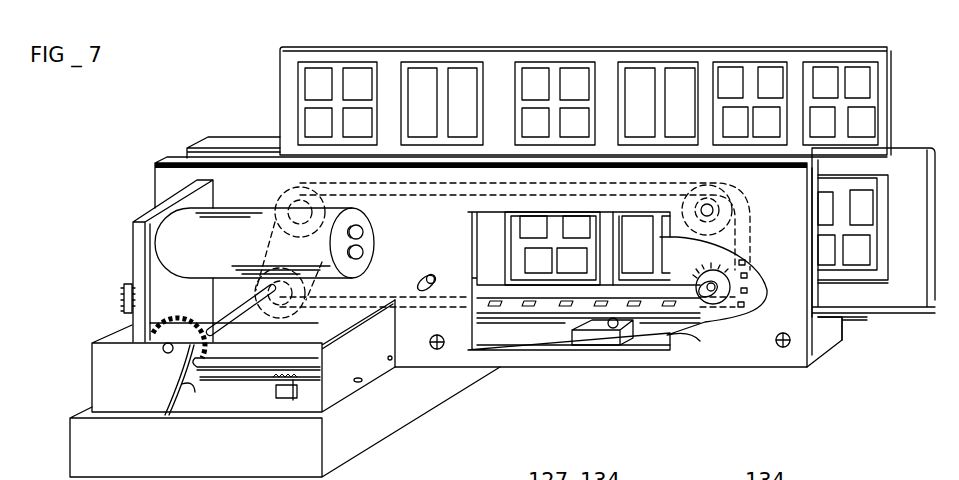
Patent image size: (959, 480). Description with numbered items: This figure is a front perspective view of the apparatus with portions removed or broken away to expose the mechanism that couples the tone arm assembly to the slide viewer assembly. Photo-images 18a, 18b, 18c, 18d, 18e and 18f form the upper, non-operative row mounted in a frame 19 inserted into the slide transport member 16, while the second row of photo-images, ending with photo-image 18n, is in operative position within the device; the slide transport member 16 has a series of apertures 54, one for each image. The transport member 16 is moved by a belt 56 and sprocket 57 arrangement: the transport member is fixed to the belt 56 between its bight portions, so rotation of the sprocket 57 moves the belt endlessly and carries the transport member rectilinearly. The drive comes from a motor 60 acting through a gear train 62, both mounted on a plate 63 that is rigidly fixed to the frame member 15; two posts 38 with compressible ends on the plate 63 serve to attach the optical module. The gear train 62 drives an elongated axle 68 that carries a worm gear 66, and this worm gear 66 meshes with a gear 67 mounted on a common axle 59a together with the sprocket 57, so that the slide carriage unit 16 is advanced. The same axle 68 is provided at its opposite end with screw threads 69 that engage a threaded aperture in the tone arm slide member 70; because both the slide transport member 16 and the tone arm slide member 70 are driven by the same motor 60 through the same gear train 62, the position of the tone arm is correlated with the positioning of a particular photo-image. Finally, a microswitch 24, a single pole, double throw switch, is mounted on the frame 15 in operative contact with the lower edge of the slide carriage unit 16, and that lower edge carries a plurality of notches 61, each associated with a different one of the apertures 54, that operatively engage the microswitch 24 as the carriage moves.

The frame member 15 is at (85, 453).
The slide transport member 16 is at (906, 290).
The photo-image 18a is at (323, 62).
The photo-image 18b is at (443, 62).
The photo-image 18c is at (558, 62).
The photo-image 18d is at (650, 62).
The photo-image 18e is at (738, 62).
The photo-image 18f is at (826, 62).
The photo-image 18n is at (843, 192).
The frame 19 is at (891, 50).
The microswitch 24 is at (596, 342).
The post 38 is at (426, 276).
The aperture 54 is at (880, 237).
The belt 56 is at (657, 306).
The sprocket 57 is at (729, 266).
The common axle 59a is at (215, 323).
The motor 60 is at (222, 255).
The notch 61 is at (515, 318).
The gear train 62 is at (121, 297).
The plate 63 is at (420, 229).
The worm gear 66 is at (188, 387).
The gear 67 is at (210, 345).
The axle 68 is at (243, 382).
The screw threads 69 is at (281, 400).
The tone arm slide member 70 is at (322, 346).